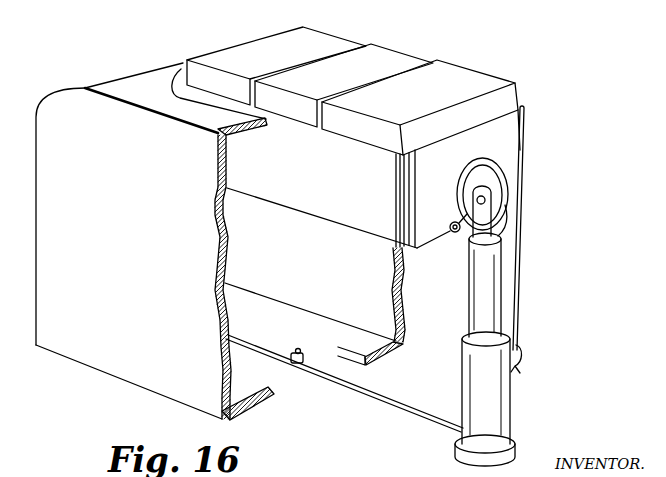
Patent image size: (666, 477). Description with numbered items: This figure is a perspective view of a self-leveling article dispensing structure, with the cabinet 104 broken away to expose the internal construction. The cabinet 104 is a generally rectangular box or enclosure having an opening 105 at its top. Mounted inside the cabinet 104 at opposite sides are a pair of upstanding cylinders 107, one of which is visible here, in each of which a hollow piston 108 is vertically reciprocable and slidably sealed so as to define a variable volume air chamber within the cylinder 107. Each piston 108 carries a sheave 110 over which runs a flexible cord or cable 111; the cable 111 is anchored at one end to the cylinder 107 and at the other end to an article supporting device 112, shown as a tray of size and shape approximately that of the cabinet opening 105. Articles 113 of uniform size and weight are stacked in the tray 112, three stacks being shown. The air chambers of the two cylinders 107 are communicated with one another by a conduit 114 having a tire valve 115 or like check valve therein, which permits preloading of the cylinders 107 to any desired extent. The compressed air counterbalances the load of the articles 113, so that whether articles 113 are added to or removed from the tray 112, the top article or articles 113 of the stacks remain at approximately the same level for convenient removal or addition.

The cabinet 104 is at (141, 176).
The opening 105 is at (227, 105).
The cylinder 107 is at (509, 405).
The piston 108 is at (499, 291).
The sheave 110 is at (507, 176).
The cable 111 is at (519, 248).
The article supporting device 112 is at (360, 183).
The article 113 is at (297, 56).
The conduit 114 is at (391, 402).
The tire valve 115 is at (305, 351).